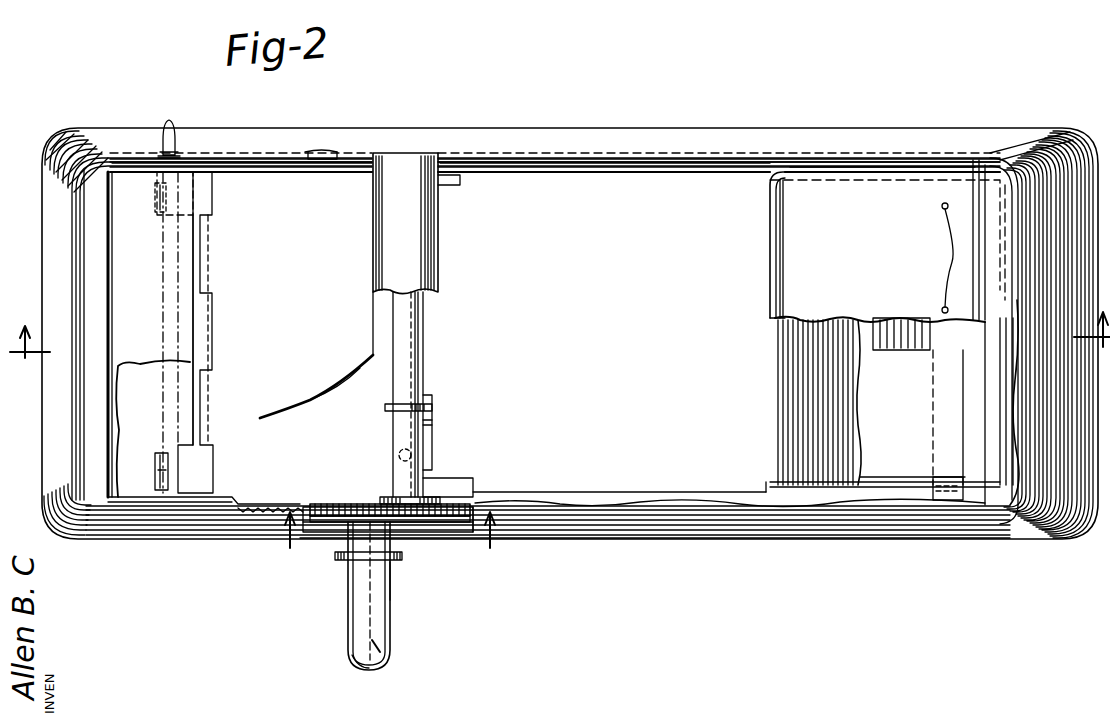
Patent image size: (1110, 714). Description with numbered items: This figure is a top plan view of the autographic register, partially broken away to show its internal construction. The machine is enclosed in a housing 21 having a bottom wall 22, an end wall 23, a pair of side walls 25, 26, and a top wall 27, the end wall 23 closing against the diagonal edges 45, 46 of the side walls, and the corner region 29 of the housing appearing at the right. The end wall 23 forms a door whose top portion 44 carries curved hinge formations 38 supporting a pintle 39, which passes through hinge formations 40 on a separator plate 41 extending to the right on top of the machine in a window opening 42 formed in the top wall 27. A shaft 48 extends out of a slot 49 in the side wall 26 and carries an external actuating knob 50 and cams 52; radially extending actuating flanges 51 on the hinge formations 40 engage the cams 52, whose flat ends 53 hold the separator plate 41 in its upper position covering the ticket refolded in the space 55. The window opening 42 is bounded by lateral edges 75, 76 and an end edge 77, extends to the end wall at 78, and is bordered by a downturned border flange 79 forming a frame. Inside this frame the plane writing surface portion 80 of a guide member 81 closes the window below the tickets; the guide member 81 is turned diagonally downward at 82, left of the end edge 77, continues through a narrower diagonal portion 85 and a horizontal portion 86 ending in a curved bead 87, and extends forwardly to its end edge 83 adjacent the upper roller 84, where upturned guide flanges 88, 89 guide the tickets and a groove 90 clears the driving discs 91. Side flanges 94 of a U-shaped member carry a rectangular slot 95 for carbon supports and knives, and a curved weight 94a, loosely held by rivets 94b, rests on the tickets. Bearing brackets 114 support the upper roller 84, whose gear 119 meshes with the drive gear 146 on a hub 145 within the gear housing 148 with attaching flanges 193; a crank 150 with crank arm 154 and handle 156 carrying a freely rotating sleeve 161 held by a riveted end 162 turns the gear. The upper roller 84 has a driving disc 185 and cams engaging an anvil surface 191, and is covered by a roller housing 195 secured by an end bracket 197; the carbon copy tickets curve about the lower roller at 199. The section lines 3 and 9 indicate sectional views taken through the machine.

The section line 3- 3 is at (558, 346).
The section line 9- 9 is at (385, 538).
The housing 21 is at (840, 534).
The bottom wall 22 is at (298, 413).
The end wall 23 is at (52, 409).
The side wall 25 is at (602, 540).
The side wall 26 is at (596, 148).
The top wall 27 is at (810, 192).
The right corner of housing 29 is at (1082, 536).
The hinge formations 38 is at (208, 200).
The pintle 39 is at (188, 170).
The hinge formations 40 is at (200, 252).
The separator plate 41 is at (282, 194).
The window opening 42 is at (310, 182).
The top portion 44 is at (90, 300).
The diagonal edge 45 is at (983, 516).
The diagonal edge 46 is at (1074, 134).
The shaft 48 is at (168, 388).
The slot 49 is at (158, 156).
The actuating knob 50 is at (170, 134).
The actuating flanges 51 is at (162, 206).
The cams 52 is at (156, 198).
The flat ends 53 is at (156, 470).
The space 55 is at (338, 386).
The lateral edge 75 is at (554, 172).
The lateral edge 76 is at (220, 498).
The end edge 77 is at (770, 249).
The window extension 78 is at (108, 175).
The border flange 79 is at (686, 168).
The plane writing surface portion 80 is at (528, 152).
The guide member 81 is at (804, 492).
The diagonal downturn 82 is at (782, 433).
The end edge 83 is at (418, 367).
The upper roller 84 is at (416, 325).
The diagonal portion 85 is at (800, 376).
The horizontal portion 86 is at (858, 453).
The curved bead 87 is at (1000, 393).
The upturned guide flange 88 is at (435, 487).
The upturned guide flange 89 is at (452, 186).
The groove 90 is at (432, 425).
The driving discs 91 is at (426, 401).
The side flanges 94 is at (918, 180).
The curved weight 94a is at (912, 342).
The rivets 94b is at (950, 246).
The rectangular slot 95 is at (955, 487).
The bearing brackets 114 is at (382, 499).
The gear 119 is at (438, 529).
The hub 145 is at (394, 527).
The drive gear 146 is at (330, 523).
The gear housing 148 is at (468, 523).
The crank 150 is at (340, 561).
The crank arm 154 is at (392, 563).
The handle 156 is at (384, 657).
The sleeve 161 is at (350, 629).
The riveted end 162 is at (364, 667).
The driving disc 185 is at (386, 409).
The anvil surface 191 is at (396, 457).
The attaching flanges 193 is at (290, 516).
The roller housing 195 is at (423, 160).
The end bracket 197 is at (350, 156).
The ticket curve 199 is at (268, 522).